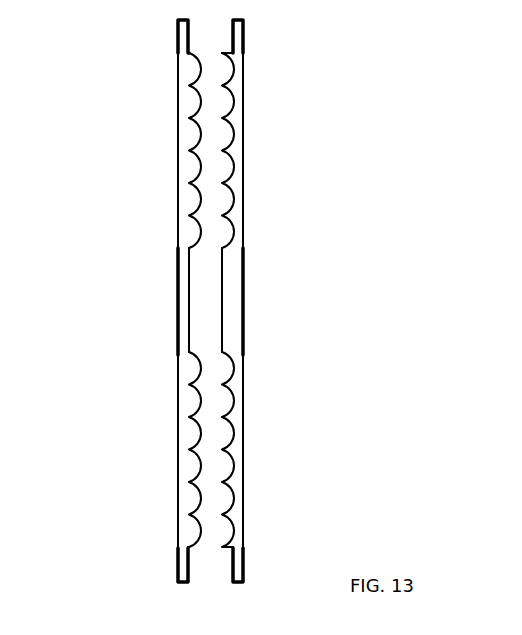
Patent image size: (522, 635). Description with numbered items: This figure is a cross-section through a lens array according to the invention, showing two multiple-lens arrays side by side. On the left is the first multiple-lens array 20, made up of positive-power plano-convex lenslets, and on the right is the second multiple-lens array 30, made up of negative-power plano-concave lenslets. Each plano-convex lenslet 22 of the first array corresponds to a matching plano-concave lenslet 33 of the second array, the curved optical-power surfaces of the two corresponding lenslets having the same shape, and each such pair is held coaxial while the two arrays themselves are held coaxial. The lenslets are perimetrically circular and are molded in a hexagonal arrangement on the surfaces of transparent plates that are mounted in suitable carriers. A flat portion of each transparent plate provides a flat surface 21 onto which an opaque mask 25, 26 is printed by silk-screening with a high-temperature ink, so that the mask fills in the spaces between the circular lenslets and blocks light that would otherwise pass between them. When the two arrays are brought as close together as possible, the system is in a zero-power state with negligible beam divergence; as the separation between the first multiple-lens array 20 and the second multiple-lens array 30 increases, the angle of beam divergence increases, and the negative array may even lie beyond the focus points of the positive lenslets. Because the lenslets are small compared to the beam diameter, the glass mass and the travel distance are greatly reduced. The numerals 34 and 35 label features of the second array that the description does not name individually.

The first multiple-lens array 20 is at (125, 48).
The flat surface 21 is at (177, 80).
The plano-convex lenslet 22 is at (199, 548).
The mask 25 is at (176, 310).
The mask 26 is at (176, 566).
The second multiple-lens array 30 is at (297, 46).
The plano-concave lenslet 33 is at (225, 542).
The upper end portion of second strip 34 is at (243, 82).
The flat intermediate section of second strip 35 is at (245, 307).